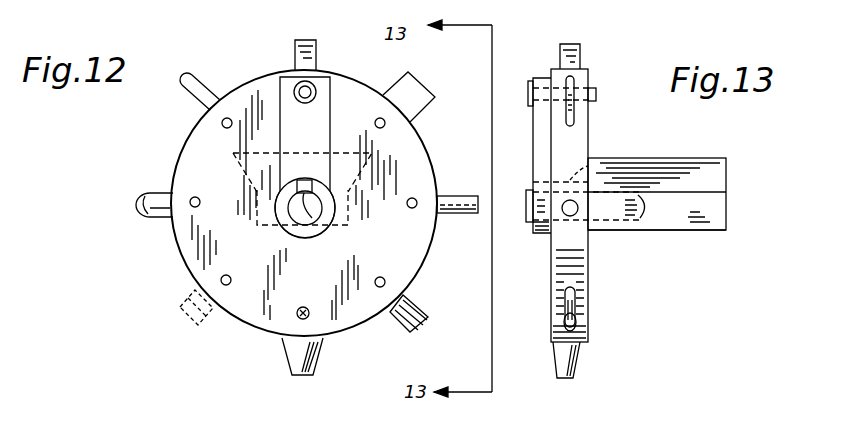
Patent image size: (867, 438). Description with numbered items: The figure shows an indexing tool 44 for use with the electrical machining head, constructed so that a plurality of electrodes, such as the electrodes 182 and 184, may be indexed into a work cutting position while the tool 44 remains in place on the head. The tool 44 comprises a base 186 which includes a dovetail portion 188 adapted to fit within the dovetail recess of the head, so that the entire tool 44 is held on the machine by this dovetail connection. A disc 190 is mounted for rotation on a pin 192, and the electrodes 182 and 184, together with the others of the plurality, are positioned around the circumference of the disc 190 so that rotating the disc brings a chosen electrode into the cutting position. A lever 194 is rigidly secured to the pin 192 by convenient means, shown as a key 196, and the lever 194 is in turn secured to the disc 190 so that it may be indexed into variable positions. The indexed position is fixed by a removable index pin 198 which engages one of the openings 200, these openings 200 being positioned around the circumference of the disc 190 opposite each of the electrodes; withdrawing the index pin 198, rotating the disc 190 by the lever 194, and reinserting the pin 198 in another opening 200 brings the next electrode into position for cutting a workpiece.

In FIG. 12, the tool 44 is at (148, 322).
In FIG. 13, the tool 44 is at (664, 292).
In FIG. 12, the electrode 182 is at (192, 100).
In FIG. 12, the electrode 184 is at (140, 209).
In FIG. 12, the base 186 is at (350, 220).
In FIG. 13, the base 186 is at (674, 222).
In FIG. 12, the dovetail portion 188 is at (345, 153).
In FIG. 13, the dovetail portion 188 is at (715, 138).
In FIG. 12, the disc 190 is at (180, 255).
In FIG. 13, the disc 190 is at (588, 278).
In FIG. 12, the pin 192 is at (292, 228).
In FIG. 13, the pin 192 is at (600, 226).
In FIG. 12, the lever 194 is at (457, 204).
In FIG. 13, the lever 194 is at (540, 148).
In FIG. 12, the key 196 is at (320, 228).
In FIG. 13, the key 196 is at (591, 172).
In FIG. 12, the removable index pin 198 is at (296, 84).
In FIG. 13, the removable index pin 198 is at (596, 96).
In FIG. 12, the openings 200 is at (299, 317).
In FIG. 13, the openings 200 is at (596, 86).